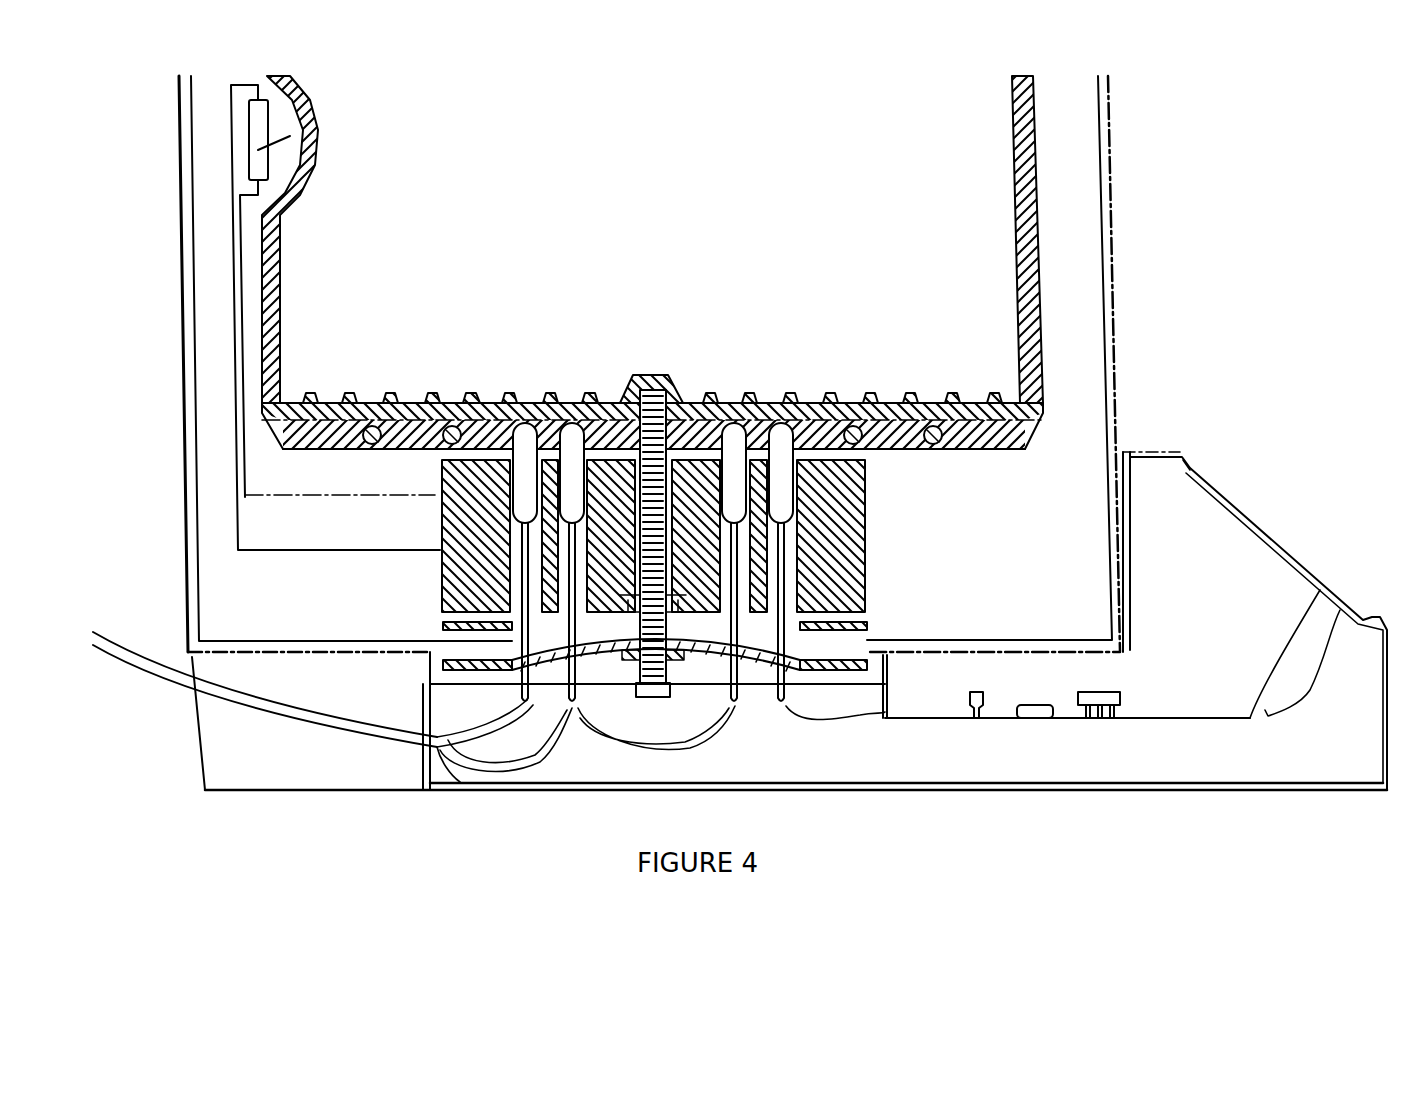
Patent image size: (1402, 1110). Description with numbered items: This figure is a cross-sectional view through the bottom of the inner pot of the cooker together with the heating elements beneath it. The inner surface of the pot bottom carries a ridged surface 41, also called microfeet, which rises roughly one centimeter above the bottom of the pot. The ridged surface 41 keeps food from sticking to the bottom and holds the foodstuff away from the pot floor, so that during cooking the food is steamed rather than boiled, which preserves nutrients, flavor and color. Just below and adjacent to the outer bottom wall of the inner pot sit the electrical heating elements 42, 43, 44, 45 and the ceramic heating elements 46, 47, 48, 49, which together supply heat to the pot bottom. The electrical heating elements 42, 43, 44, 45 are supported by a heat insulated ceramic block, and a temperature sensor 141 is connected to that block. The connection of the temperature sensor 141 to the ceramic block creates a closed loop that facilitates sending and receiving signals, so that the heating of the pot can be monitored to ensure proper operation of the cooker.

The temperature sensor 141 is at (300, 128).
The ridged surface 41 is at (603, 393).
The electrical heating element 42 is at (518, 423).
The electrical heating element 43 is at (566, 425).
The electrical heating element 44 is at (727, 423).
The electrical heating element 45 is at (771, 423).
The ceramic heating element 46 is at (340, 450).
The ceramic heating element 47 is at (437, 457).
The ceramic heating element 48 is at (963, 450).
The ceramic heating element 49 is at (870, 455).